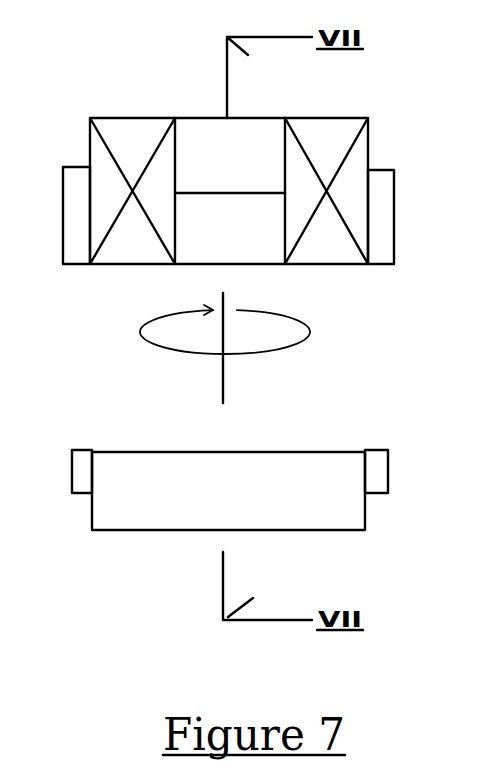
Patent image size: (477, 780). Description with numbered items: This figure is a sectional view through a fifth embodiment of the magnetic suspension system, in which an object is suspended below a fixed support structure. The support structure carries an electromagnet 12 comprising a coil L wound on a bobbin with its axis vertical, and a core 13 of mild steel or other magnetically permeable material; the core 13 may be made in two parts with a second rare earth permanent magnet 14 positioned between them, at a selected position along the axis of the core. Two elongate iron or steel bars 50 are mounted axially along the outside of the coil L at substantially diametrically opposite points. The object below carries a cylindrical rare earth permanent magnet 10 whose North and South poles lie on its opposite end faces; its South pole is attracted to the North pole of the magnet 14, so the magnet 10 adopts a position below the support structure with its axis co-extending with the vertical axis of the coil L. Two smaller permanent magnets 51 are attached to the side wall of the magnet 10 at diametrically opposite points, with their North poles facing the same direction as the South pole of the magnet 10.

The permanent magnet 10 is at (132, 517).
The electromagnet 12 is at (337, 253).
The core 13 is at (243, 133).
The second permanent magnet 14 is at (193, 257).
The elongate bars 50 is at (72, 235).
The smaller permanent magnets 51 is at (72, 488).
The coil L is at (384, 167).